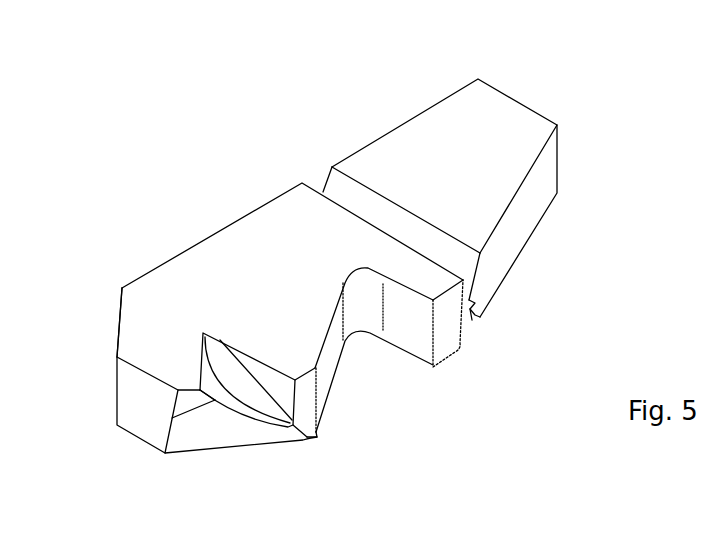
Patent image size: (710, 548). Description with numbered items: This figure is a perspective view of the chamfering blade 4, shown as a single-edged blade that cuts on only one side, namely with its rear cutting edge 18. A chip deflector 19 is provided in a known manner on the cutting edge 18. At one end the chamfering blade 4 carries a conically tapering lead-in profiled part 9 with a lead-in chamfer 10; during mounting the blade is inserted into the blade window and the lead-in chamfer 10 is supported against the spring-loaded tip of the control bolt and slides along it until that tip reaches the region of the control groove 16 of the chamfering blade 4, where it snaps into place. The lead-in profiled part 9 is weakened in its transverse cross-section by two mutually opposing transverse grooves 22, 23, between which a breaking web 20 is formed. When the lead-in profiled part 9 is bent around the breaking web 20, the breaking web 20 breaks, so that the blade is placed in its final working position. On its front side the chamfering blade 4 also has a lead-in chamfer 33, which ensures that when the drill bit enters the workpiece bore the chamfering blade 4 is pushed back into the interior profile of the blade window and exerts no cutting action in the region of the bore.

The chamfering blade 4 is at (268, 268).
The lead-in profiled part 9 is at (480, 121).
The lead-in chamfer 10 is at (530, 217).
The control groove 16 is at (369, 322).
The cutting edge 18 is at (246, 422).
The chip deflector 19 is at (277, 392).
The breaking web 20 is at (483, 305).
The transverse groove 22 is at (476, 263).
The transverse groove 23 is at (474, 321).
The lead-in chamfer 33 is at (107, 349).